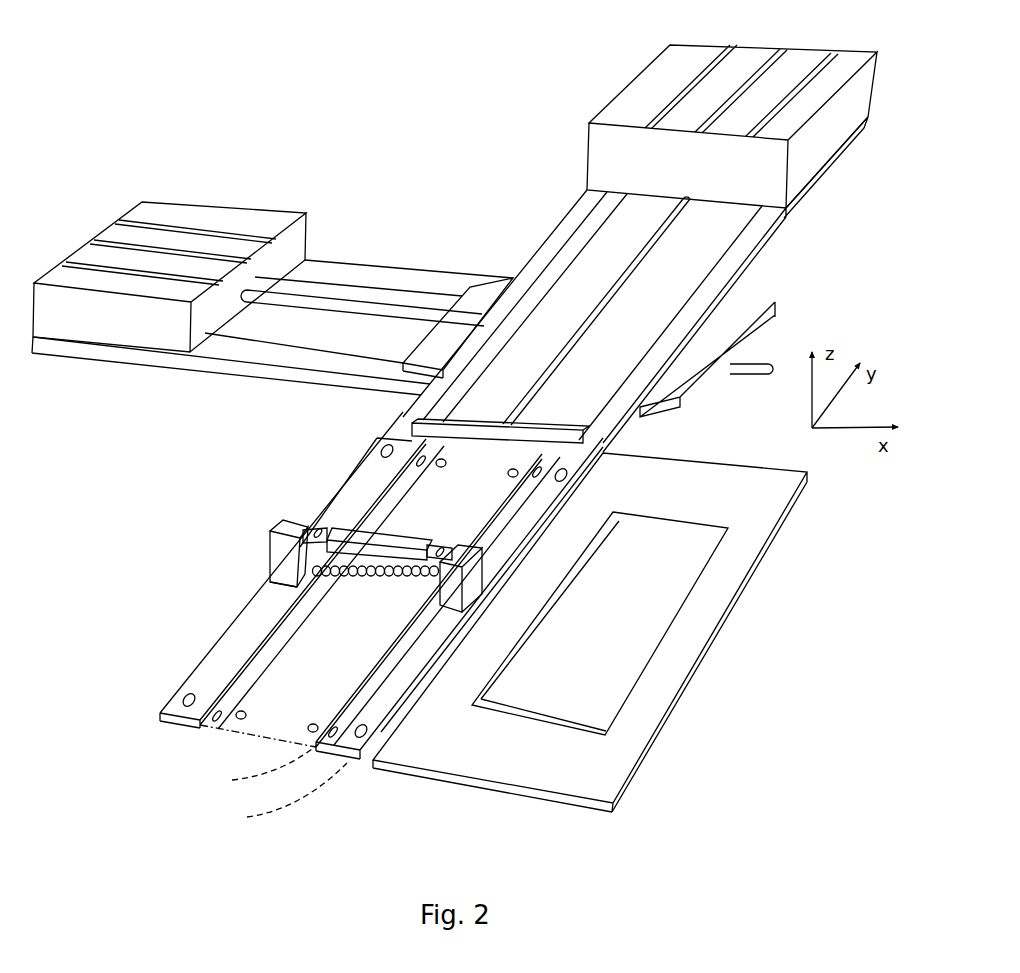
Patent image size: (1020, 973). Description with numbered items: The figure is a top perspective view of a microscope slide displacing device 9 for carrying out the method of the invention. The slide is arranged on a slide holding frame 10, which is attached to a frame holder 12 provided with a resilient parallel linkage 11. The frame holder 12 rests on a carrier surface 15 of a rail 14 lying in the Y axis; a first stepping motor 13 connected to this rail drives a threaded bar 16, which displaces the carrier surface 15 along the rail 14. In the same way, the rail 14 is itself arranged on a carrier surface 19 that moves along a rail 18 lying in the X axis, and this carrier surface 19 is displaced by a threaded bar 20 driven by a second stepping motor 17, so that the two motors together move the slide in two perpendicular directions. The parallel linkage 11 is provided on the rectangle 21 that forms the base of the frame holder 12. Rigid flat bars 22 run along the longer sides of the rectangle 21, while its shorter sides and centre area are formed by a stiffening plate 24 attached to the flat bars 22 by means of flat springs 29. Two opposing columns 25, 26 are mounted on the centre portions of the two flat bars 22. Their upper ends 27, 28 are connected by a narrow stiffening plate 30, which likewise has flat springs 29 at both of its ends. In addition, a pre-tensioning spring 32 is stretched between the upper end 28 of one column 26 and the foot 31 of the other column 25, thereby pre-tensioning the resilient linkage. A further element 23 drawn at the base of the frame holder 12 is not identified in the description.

The microscope slide displacing device 9 is at (408, 100).
The slide holding frame 10 is at (513, 790).
The resilient parallel linkage 11 is at (248, 518).
The frame holder 12 is at (263, 728).
The first stepping motor 13 is at (632, 83).
The rail 14 is at (555, 240).
The carrier surface 15 is at (410, 430).
The threaded bar 16 is at (641, 246).
The second stepping motor 17 is at (200, 208).
The rail 18 is at (378, 272).
The carrier surface 19 is at (473, 298).
The threaded bar 20 is at (415, 310).
The rectangle 21 is at (367, 620).
The rigid flat bars 22 is at (163, 733).
The guide strip 23 is at (198, 735).
The stiffening plate 24 is at (410, 497).
The column 25 is at (267, 567).
The column 26 is at (470, 578).
The upper end 27 is at (302, 523).
The upper end 28 is at (488, 540).
The flat springs 29 is at (447, 548).
The narrow stiffening plate 30 is at (412, 540).
The foot 31 is at (268, 583).
The pre-tensioning spring 32 is at (363, 577).